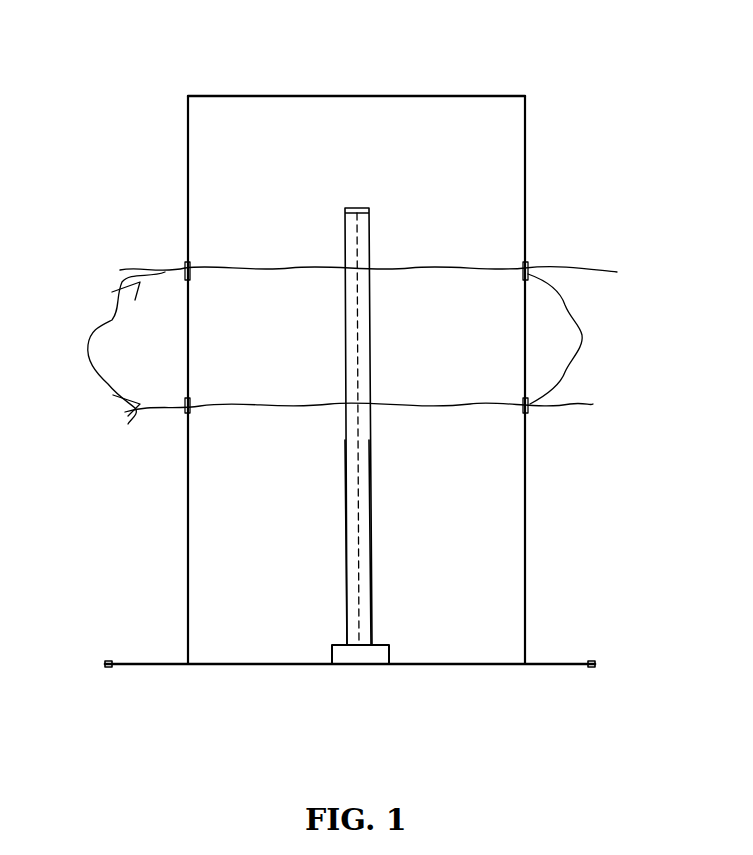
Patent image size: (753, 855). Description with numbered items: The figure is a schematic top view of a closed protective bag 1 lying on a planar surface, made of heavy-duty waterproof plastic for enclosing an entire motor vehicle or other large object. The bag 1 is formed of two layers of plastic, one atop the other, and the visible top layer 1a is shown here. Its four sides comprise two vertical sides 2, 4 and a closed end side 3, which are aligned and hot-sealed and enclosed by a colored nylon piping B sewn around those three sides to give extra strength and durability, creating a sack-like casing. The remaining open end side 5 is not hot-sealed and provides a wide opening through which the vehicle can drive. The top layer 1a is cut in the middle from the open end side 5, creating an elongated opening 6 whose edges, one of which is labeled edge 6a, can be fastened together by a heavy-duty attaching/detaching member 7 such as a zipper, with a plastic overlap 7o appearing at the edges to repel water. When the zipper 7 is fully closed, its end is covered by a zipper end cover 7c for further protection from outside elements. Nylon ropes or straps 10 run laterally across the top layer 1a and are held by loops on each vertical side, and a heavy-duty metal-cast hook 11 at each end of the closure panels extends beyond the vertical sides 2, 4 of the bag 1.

The protective bag 1 is at (568, 85).
The top layer 1a is at (450, 188).
The vertical side 2 is at (188, 563).
The closed end side 3 is at (268, 95).
The vertical side 4 is at (527, 142).
The open end side 5 is at (413, 667).
The opening 6 is at (372, 322).
The edge of the opening 6a is at (367, 503).
The attaching/detaching member 7 is at (352, 355).
The plastic overlap 7o is at (347, 482).
The zipper end cover 7c is at (340, 665).
The ropes or straps 10 is at (326, 343).
The hook 11 is at (125, 675).
The nylon piping B is at (530, 600).